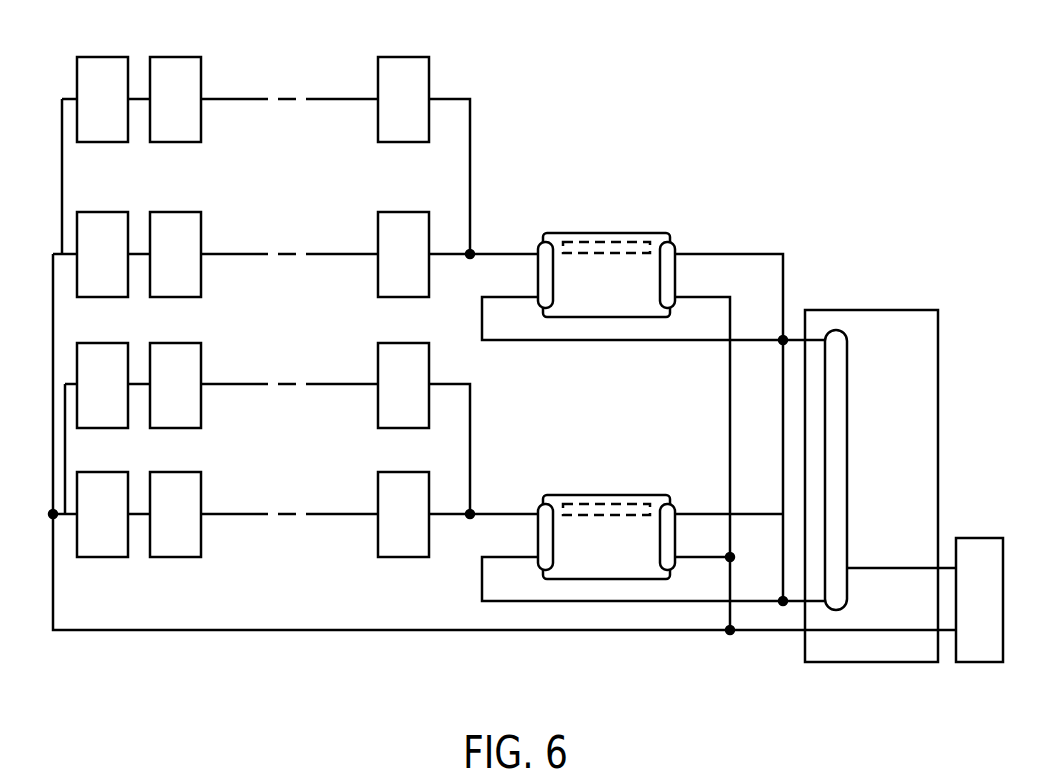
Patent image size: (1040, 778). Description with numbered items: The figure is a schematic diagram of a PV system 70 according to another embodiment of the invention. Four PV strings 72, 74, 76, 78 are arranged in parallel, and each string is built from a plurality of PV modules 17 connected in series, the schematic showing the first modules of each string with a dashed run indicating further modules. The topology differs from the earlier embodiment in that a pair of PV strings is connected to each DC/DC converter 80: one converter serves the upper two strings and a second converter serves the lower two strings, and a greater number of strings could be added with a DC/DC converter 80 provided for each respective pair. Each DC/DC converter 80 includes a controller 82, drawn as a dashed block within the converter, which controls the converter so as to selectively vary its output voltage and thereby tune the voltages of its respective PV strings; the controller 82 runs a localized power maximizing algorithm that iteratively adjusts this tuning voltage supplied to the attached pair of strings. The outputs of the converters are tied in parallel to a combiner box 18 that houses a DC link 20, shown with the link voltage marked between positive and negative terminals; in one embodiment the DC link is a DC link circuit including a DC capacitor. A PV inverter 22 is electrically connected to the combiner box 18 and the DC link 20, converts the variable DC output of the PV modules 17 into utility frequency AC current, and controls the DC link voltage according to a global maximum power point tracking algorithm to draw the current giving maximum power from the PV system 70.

The PV module 17 is at (103, 57).
The combiner box 18 is at (938, 357).
The DC link 20 is at (845, 350).
The PV inverter 22 is at (980, 538).
The PV system 70 is at (884, 148).
The PV string 72 is at (281, 68).
The PV string 74 is at (281, 223).
The PV string 76 is at (281, 353).
The PV string 78 is at (281, 483).
The DC/DC converter 80 is at (637, 233).
The controller 82 is at (577, 242).